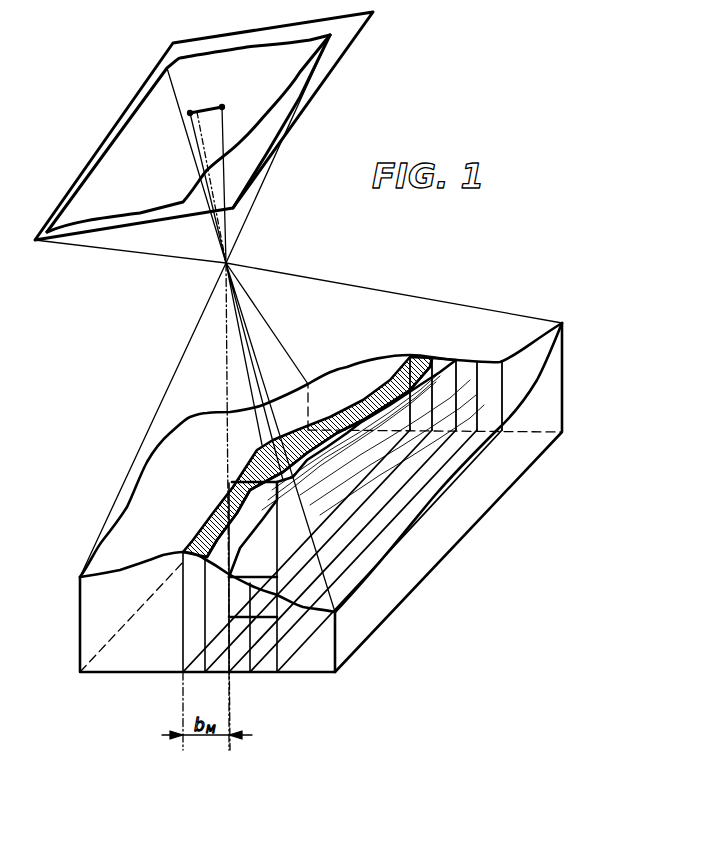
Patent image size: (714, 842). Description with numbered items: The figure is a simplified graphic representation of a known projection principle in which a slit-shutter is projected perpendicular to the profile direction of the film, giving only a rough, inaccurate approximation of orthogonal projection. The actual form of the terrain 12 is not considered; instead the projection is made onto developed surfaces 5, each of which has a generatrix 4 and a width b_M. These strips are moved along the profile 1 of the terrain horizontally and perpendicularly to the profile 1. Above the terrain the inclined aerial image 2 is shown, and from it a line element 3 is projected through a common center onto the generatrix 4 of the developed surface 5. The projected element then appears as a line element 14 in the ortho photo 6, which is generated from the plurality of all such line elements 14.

The profile 1 is at (190, 553).
The inclined aerial image 2 is at (343, 27).
The line element 3 is at (201, 107).
The generatrix 4 is at (237, 480).
The developed surface 5 is at (208, 530).
The ortho photo 6 is at (352, 628).
The terrain 12 is at (545, 343).
The line element 14 is at (257, 620).